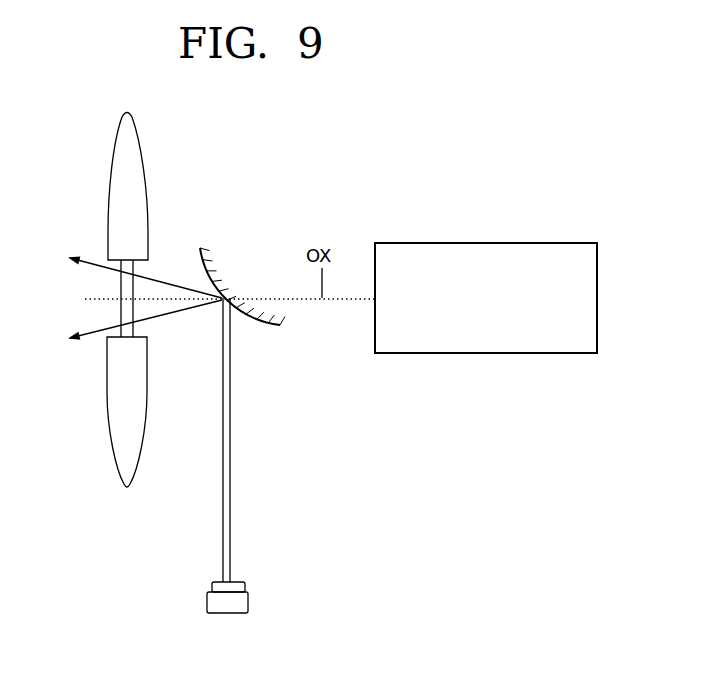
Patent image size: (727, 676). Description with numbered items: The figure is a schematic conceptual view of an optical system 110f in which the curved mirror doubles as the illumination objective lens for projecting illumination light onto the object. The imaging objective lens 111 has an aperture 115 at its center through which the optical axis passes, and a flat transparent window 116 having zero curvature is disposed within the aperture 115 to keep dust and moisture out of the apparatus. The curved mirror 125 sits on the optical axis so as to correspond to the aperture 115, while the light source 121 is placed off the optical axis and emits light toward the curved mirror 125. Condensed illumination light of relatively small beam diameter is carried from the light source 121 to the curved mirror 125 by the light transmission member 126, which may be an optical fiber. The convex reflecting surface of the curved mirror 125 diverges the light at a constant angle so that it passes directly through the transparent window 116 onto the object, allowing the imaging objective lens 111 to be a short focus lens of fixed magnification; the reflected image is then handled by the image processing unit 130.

The optical system 110f is at (100, 527).
The imaging objective lens 111 is at (115, 183).
The aperture 115 is at (110, 276).
The transparent window 116 is at (127, 322).
The curved mirror 125 is at (261, 325).
The light transmission member 126 is at (232, 510).
The light source 121 is at (250, 603).
The image processing unit 130 is at (458, 243).